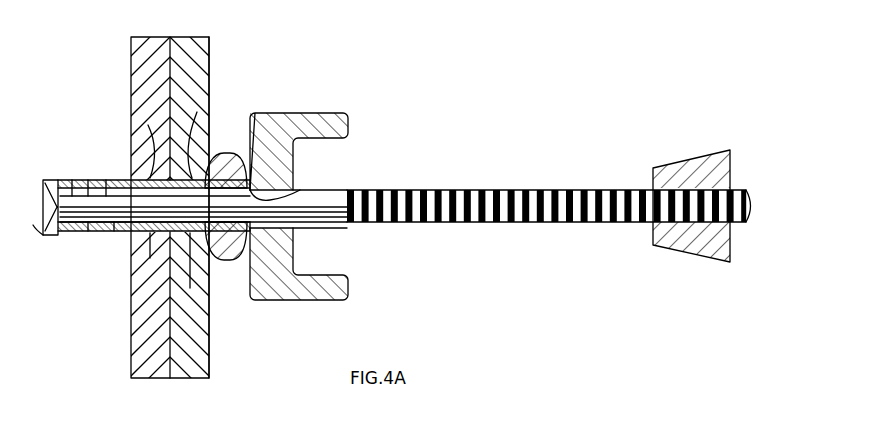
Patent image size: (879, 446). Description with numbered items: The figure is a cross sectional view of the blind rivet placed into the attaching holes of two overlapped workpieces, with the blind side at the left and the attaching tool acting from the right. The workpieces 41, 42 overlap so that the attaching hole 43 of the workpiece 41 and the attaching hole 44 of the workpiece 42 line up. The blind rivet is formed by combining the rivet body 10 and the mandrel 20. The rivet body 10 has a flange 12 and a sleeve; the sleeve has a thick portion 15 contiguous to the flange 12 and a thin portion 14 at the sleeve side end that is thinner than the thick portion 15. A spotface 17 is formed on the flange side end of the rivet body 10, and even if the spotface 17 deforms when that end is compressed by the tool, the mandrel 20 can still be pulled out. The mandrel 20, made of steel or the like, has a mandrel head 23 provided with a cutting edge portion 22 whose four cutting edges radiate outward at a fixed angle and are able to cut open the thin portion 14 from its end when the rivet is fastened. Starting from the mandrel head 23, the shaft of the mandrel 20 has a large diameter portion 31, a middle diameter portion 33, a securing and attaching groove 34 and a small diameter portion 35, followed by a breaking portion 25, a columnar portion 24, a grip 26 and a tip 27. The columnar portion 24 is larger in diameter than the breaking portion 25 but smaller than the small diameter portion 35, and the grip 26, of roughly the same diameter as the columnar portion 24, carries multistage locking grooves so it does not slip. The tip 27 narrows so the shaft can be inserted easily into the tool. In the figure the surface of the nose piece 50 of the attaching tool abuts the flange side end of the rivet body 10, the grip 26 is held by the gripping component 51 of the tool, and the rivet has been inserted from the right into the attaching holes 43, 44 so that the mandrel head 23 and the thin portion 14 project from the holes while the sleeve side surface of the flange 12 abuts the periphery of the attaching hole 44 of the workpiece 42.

The rivet body 10 is at (72, 245).
The flange 12 is at (228, 153).
The thin portion 14 is at (150, 178).
The thick portion 15 is at (192, 178).
The spotface 17 is at (300, 190).
The mandrel 20 is at (408, 167).
The cutting edge portion 22 is at (55, 178).
The mandrel head 23 is at (44, 195).
The columnar portion 24 is at (225, 215).
The breaking portion 25 is at (114, 231).
The grip 26 is at (492, 190).
The tip 27 is at (748, 190).
The large diameter portion 31 is at (72, 180).
The middle diameter portion 33 is at (88, 180).
The securing and attaching groove 34 is at (88, 231).
The small diameter portion 35 is at (106, 180).
The workpiece 41 is at (131, 53).
The workpiece 42 is at (210, 53).
The attaching hole 43 is at (150, 235).
The attaching hole 44 is at (190, 235).
The nose piece 50 is at (318, 125).
The gripping component 51 is at (690, 170).